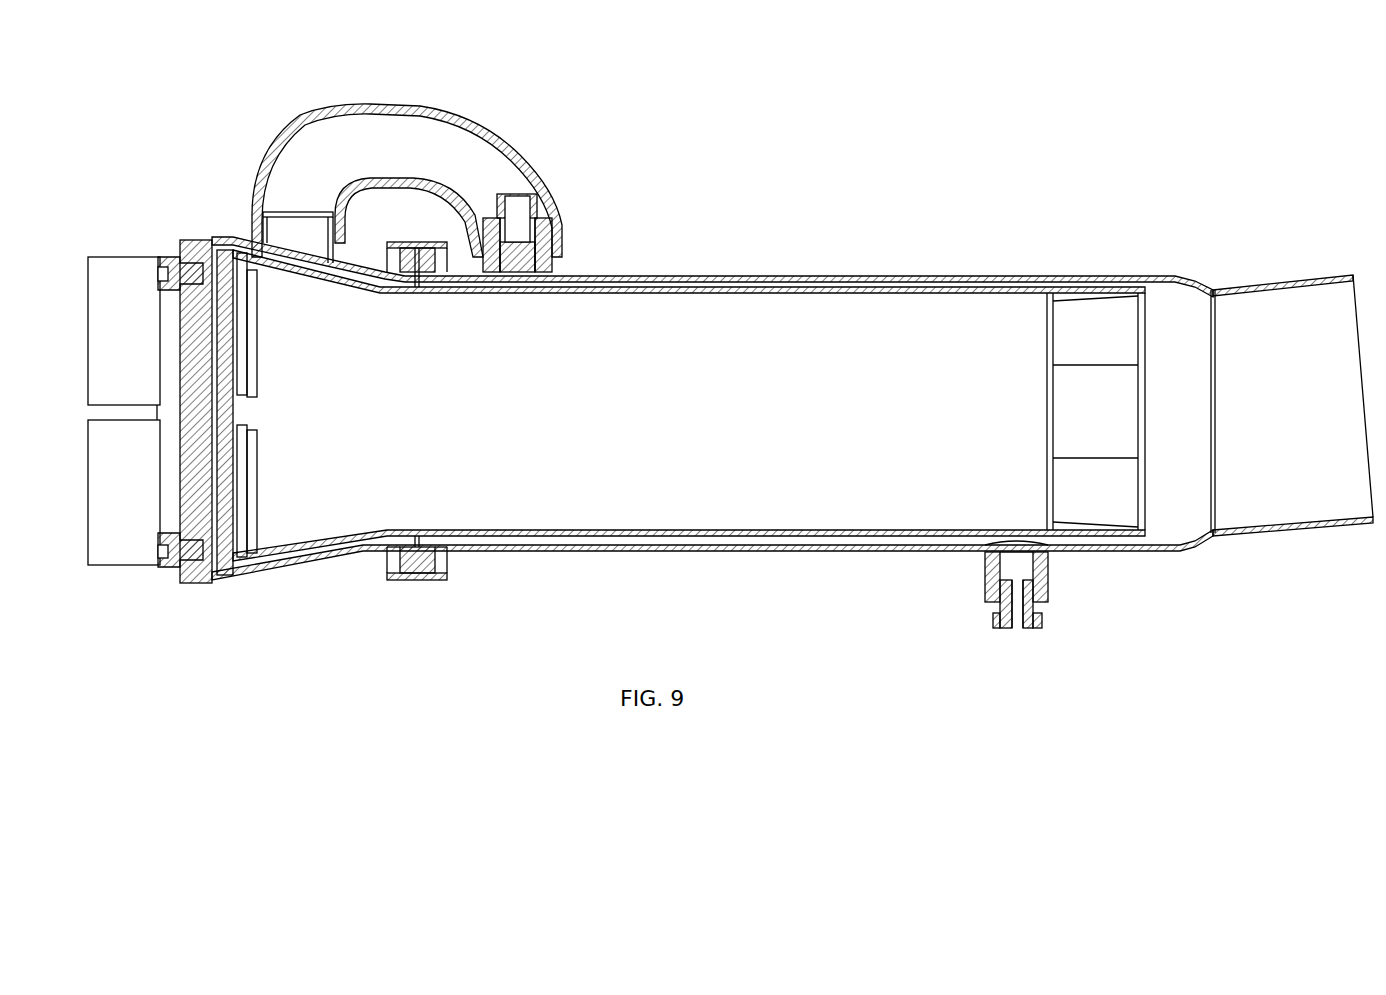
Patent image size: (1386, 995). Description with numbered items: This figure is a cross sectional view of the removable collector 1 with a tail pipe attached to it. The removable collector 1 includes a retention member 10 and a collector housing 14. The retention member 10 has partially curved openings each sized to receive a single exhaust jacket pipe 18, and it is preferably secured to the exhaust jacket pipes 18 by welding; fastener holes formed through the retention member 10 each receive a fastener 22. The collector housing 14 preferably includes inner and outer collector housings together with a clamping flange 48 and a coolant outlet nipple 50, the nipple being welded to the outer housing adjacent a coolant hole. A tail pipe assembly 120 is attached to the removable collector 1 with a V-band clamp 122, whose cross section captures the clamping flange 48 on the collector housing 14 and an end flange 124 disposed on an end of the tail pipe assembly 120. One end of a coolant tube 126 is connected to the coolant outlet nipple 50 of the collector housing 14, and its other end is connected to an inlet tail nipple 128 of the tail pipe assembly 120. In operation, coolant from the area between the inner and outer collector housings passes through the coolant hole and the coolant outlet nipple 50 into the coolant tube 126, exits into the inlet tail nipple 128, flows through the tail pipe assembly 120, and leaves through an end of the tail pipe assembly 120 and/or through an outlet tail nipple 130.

The removable collector 1 is at (197, 215).
The retention member 10 is at (180, 478).
The collector housing 14 is at (257, 590).
The exhaust jacket pipe 18 is at (118, 287).
The fastener 22 is at (172, 567).
The clamping flange 48 is at (398, 580).
The coolant outlet nipple 50 is at (288, 212).
The tail pipe assembly 120 is at (783, 255).
The V-band clamp 122 is at (422, 580).
The end flange 124 is at (443, 580).
The coolant tube 126 is at (466, 123).
The inlet tail nipple 128 is at (548, 225).
The outlet tail nipple 130 is at (1045, 573).